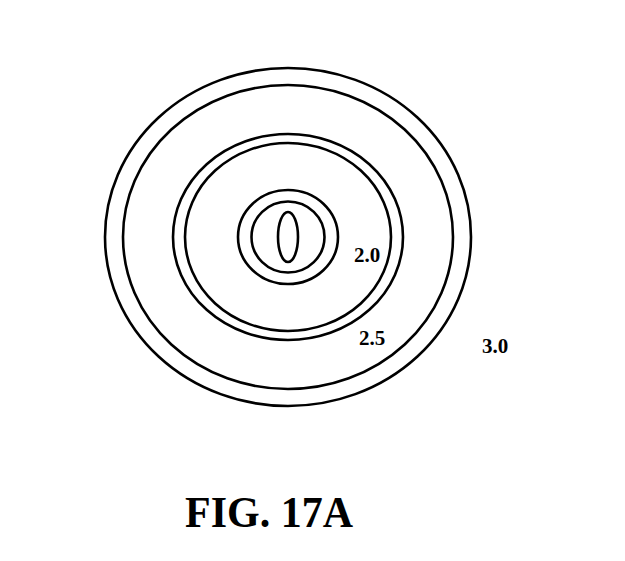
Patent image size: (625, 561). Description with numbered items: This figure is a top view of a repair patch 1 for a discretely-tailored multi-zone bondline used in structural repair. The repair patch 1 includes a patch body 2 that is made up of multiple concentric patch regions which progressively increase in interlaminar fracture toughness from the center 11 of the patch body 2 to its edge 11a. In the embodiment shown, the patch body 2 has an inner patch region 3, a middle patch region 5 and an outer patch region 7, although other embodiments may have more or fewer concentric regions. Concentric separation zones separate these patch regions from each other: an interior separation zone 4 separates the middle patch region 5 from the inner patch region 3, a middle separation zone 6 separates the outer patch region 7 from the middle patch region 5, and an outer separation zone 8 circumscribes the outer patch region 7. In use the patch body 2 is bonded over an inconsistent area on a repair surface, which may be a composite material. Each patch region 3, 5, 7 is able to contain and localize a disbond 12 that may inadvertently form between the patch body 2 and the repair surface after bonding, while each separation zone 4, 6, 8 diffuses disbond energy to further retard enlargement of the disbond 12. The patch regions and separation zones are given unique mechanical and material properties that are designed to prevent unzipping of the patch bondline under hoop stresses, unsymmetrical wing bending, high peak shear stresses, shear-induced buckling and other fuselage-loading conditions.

The repair patch 1 is at (172, 70).
The patch body 2 is at (453, 132).
The inner patch region 3 is at (272, 220).
The interior separation zone 4 is at (318, 207).
The middle patch region 5 is at (360, 195).
The middle separation zone 6 is at (370, 313).
The outer patch region 7 is at (425, 258).
The outer separation zone 8 is at (448, 303).
The center 11 is at (288, 255).
The edge 11a is at (130, 328).
The disbond 12 is at (297, 237).